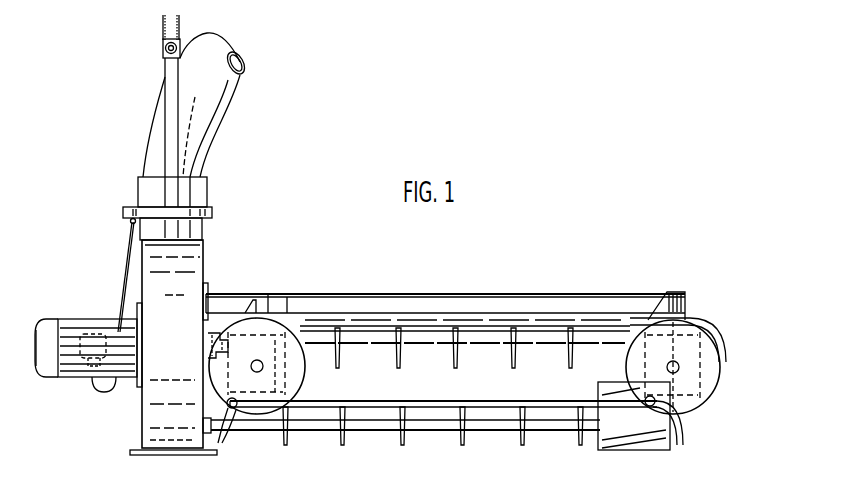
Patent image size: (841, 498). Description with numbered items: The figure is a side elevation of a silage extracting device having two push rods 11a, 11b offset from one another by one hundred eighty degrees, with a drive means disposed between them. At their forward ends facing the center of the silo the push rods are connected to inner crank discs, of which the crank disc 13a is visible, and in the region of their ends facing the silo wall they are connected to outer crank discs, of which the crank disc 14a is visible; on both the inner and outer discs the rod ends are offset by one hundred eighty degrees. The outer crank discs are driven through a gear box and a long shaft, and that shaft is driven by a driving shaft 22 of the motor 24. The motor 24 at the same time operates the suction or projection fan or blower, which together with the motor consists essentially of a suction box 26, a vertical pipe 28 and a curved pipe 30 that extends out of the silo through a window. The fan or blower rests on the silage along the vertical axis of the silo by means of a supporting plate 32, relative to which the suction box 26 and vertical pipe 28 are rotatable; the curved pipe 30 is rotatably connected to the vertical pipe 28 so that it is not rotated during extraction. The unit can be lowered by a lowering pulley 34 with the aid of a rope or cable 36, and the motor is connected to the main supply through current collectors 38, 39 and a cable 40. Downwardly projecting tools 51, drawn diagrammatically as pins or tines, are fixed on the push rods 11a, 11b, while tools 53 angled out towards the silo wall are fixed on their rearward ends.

The push rod 11a is at (468, 400).
The push rod 11b is at (497, 311).
The crank disc 13a is at (300, 378).
The crank disc 14a is at (690, 400).
The driving shaft 22 is at (214, 342).
The motor 24 is at (80, 370).
The suction box 26 is at (141, 408).
The vertical pipe 28 is at (192, 229).
The curved pipe 30 is at (205, 112).
The supporting plate 32 is at (133, 451).
The lowering pulley 34 is at (163, 50).
The rope or cable 36 is at (163, 27).
The current collector 38 is at (200, 190).
The current collector 39 is at (212, 212).
The cable 40 is at (128, 278).
The tools 51 is at (403, 360).
The tools 53 is at (706, 330).